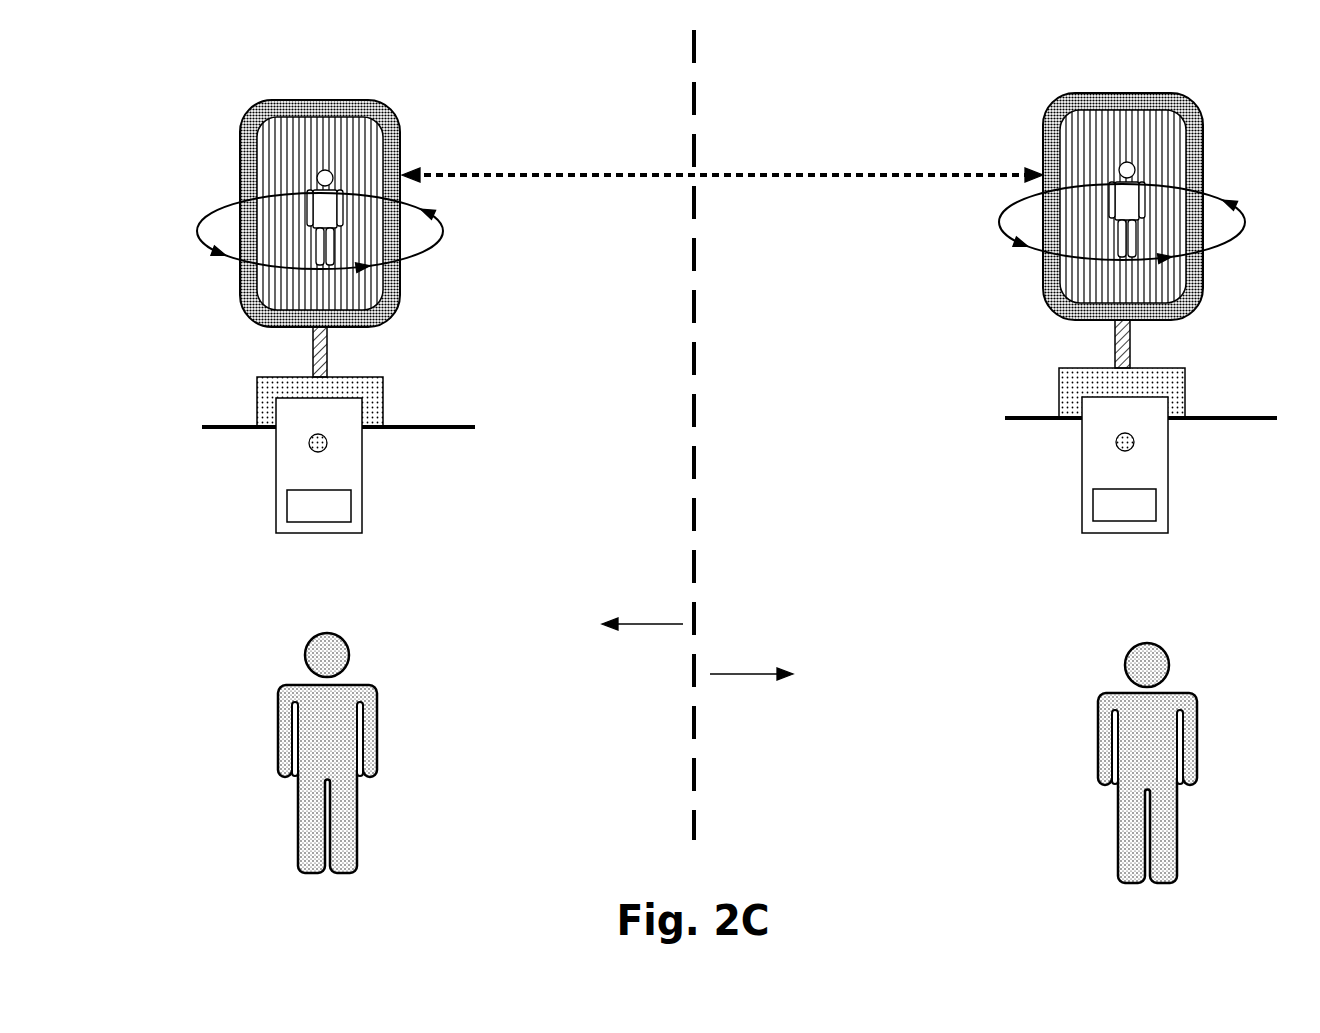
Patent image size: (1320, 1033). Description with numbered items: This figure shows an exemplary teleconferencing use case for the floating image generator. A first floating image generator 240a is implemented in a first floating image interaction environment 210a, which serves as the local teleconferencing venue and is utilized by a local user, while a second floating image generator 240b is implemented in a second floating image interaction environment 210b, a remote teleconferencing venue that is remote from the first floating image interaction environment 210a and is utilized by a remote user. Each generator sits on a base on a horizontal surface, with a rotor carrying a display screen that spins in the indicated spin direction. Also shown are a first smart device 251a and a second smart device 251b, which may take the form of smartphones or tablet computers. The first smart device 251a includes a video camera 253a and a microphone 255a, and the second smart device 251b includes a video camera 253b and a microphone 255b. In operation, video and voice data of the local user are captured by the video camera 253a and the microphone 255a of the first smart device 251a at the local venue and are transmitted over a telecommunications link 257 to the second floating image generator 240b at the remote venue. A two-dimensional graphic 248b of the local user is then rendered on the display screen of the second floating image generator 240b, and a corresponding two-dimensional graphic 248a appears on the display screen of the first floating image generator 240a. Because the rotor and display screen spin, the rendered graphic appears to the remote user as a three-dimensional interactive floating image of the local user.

The first floating image interaction environment 210a is at (614, 626).
The second floating image interaction environment 210b is at (781, 676).
The first floating image generator 240a is at (339, 299).
The second floating image generator 240b is at (1143, 296).
The 2D graphic 248a is at (360, 179).
The 2D graphic 248b is at (1161, 172).
The first smart device 251a is at (275, 478).
The second smart device 251b is at (1170, 458).
The video camera 253a is at (328, 446).
The video camera 253b is at (1115, 444).
The microphone 255a is at (352, 512).
The microphone 255b is at (1092, 512).
The telecommunications link 257 is at (746, 172).